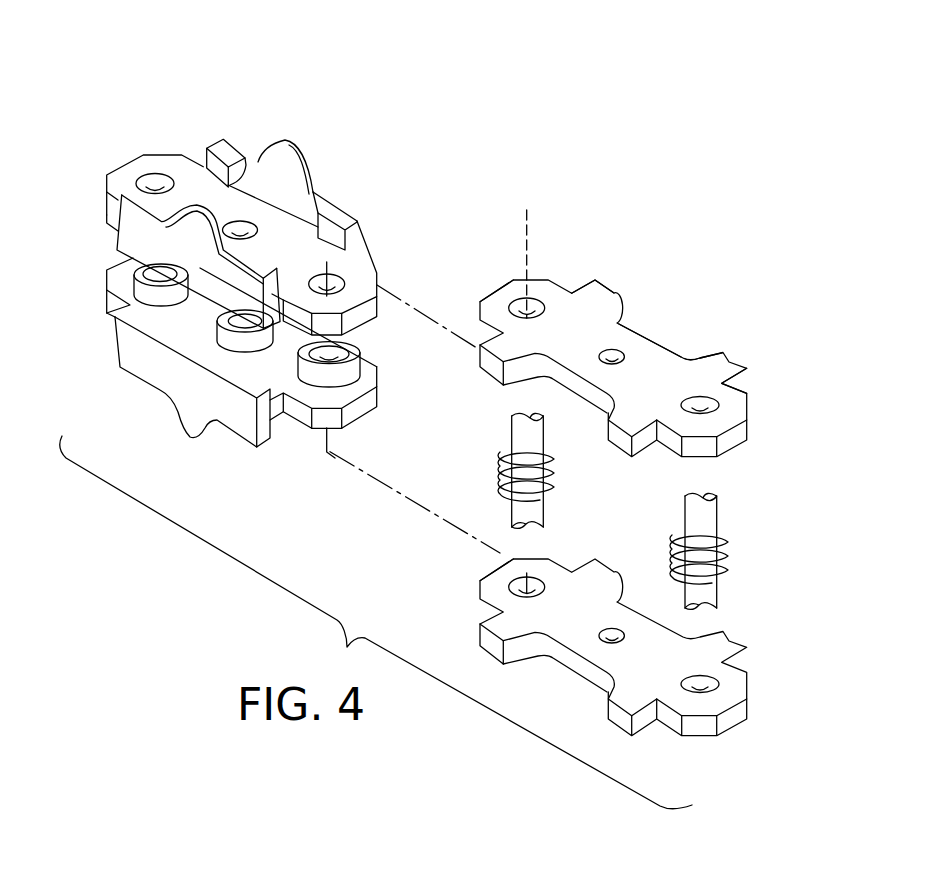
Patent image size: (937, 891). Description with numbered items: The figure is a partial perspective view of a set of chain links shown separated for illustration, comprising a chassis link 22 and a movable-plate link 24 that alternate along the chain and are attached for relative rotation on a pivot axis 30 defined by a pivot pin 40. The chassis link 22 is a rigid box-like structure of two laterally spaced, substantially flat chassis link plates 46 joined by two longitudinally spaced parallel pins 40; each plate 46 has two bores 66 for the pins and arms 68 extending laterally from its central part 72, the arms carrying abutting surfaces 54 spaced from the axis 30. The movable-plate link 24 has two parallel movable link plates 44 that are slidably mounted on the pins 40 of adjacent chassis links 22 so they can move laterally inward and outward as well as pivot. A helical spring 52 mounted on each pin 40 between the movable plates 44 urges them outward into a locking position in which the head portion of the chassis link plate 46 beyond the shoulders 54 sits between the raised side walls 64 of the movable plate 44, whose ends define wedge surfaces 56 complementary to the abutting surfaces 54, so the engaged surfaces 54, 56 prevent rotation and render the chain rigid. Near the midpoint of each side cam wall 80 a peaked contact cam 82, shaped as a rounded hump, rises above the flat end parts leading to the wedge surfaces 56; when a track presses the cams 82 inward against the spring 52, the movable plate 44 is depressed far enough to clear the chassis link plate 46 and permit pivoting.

The chassis link 22 is at (694, 273).
The movable-plate link 24 is at (300, 102).
The pivot axis 30 is at (530, 215).
The pivot pin 40 is at (520, 437).
The movable link plate 44 is at (125, 235).
The chassis link plate 46 is at (497, 278).
The helical spring 52 is at (725, 552).
The abutting surface 54 is at (593, 282).
The wedge surface 56 is at (360, 247).
The raised side wall 64 is at (207, 148).
The bore 66 is at (714, 408).
The arm 68 is at (727, 361).
The central part 72 is at (650, 353).
The side cam wall 80 is at (327, 193).
The peaked contact cam 82 is at (290, 148).